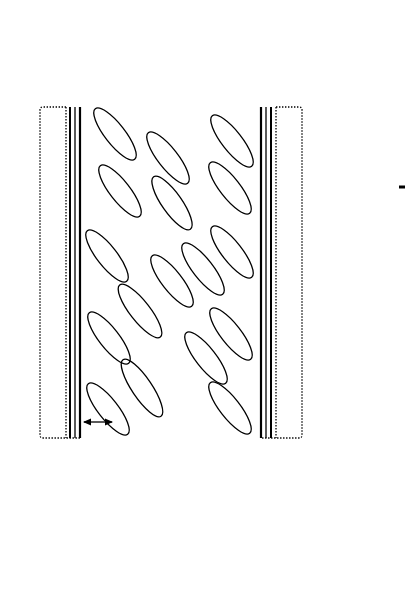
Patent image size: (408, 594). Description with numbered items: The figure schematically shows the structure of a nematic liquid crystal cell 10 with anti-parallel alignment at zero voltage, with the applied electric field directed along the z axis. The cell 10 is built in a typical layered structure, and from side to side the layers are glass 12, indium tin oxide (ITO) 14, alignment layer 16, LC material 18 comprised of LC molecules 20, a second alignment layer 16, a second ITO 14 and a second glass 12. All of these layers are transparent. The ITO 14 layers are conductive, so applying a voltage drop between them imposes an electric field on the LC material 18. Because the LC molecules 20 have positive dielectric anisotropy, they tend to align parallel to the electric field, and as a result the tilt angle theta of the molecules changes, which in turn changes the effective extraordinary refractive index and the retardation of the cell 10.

The cell 10 is at (73, 43).
The glass 12 is at (55, 107).
The indium tin oxide (ITO) 14 is at (70, 107).
The alignment layer 16 is at (76, 107).
The LC material 18 is at (182, 74).
The LC molecules 20 is at (125, 121).